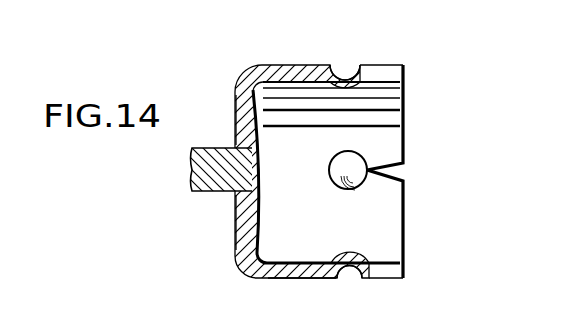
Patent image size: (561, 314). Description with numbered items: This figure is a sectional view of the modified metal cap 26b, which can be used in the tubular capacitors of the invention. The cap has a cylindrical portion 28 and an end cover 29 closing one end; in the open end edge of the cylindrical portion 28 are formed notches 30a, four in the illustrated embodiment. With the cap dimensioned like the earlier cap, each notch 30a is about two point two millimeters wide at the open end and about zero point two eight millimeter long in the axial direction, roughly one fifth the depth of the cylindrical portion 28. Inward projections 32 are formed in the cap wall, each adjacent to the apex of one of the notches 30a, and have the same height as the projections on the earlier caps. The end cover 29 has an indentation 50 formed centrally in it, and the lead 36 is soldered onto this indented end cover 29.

The modified metal cap 26b is at (230, 77).
The indentation 50 is at (239, 134).
The lead 36 is at (225, 192).
The end cover 29 is at (243, 238).
The cylindrical portion 28 is at (300, 268).
The inward projection 32 is at (345, 79).
The notch 30a is at (390, 72).